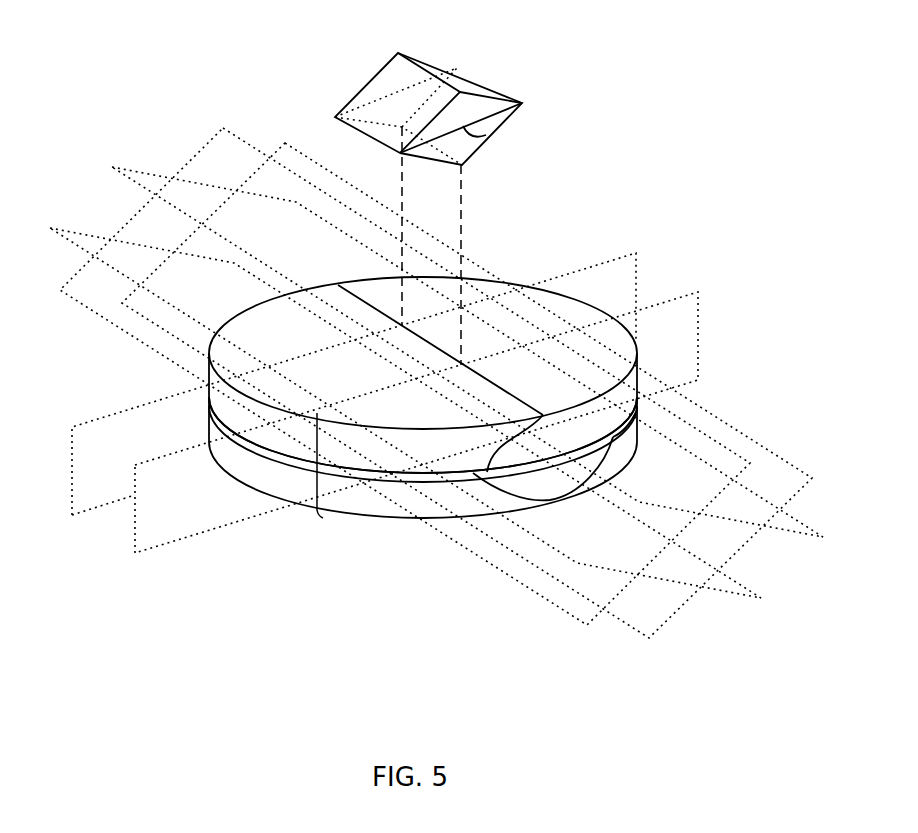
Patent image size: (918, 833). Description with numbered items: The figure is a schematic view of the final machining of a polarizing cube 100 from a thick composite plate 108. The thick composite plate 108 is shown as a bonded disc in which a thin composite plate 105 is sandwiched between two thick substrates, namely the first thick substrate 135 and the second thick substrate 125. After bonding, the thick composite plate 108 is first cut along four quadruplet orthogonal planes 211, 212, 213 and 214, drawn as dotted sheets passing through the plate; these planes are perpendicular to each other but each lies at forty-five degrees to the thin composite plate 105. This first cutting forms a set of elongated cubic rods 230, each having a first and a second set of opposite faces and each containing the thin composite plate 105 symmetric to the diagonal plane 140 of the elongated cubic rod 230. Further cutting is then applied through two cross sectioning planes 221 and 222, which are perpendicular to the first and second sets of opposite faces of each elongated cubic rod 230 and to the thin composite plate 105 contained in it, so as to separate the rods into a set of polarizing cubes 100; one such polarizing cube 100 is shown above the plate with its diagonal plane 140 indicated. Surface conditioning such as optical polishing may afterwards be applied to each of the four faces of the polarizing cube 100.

The polarizing cube 100 is at (550, 40).
The diagonal plane 140 is at (483, 137).
The thin composite plate 105 is at (360, 473).
The thick composite plate 108 is at (313, 465).
The second thick substrate 125 is at (423, 502).
The first thick substrate 135 is at (410, 453).
The elongated cubic rod 230 is at (483, 473).
The quadruplet orthogonal plane 211 is at (555, 551).
The quadruplet orthogonal plane 212 is at (575, 621).
The quadruplet orthogonal plane 213 is at (152, 174).
The quadruplet orthogonal plane 214 is at (299, 147).
The cross sectioning plane 221 is at (700, 327).
The cross sectioning plane 222 is at (637, 268).